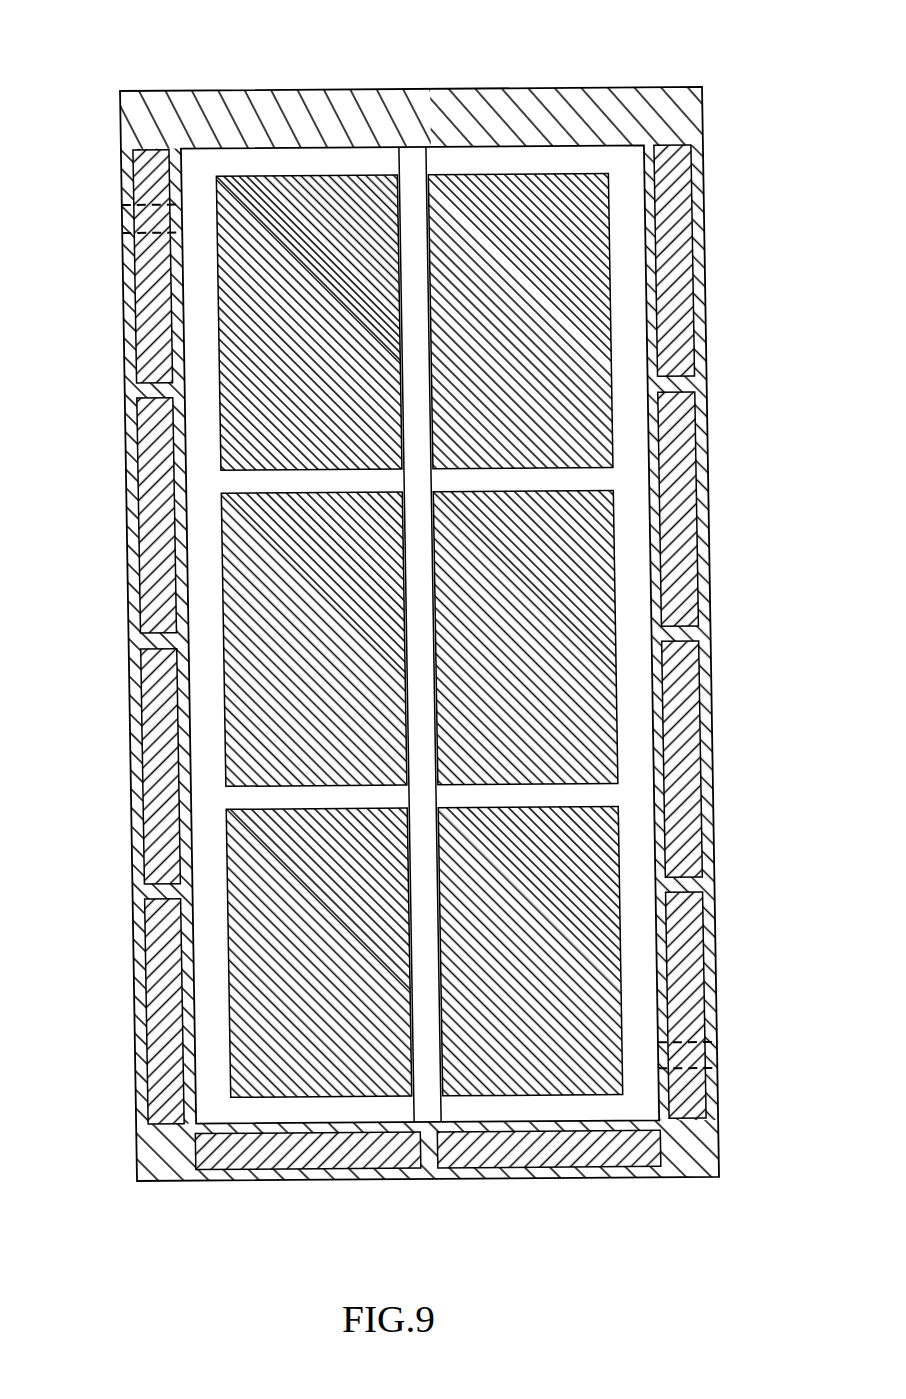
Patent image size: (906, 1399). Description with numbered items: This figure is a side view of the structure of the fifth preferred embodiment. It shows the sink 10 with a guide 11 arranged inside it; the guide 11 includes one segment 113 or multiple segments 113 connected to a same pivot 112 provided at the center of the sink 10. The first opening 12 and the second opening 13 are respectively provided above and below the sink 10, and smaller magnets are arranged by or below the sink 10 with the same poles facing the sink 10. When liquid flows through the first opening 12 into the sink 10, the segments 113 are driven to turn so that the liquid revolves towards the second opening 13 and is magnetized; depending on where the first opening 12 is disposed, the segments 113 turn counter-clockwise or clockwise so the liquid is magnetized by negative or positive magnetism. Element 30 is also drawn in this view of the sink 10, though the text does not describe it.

The sink 10 is at (598, 141).
The guide 11 is at (275, 177).
The pivot 112 is at (415, 157).
The segment 113 is at (226, 448).
The first opening 12 is at (131, 221).
The second opening 13 is at (700, 1055).
The reinforcing strip 30 is at (137, 340).